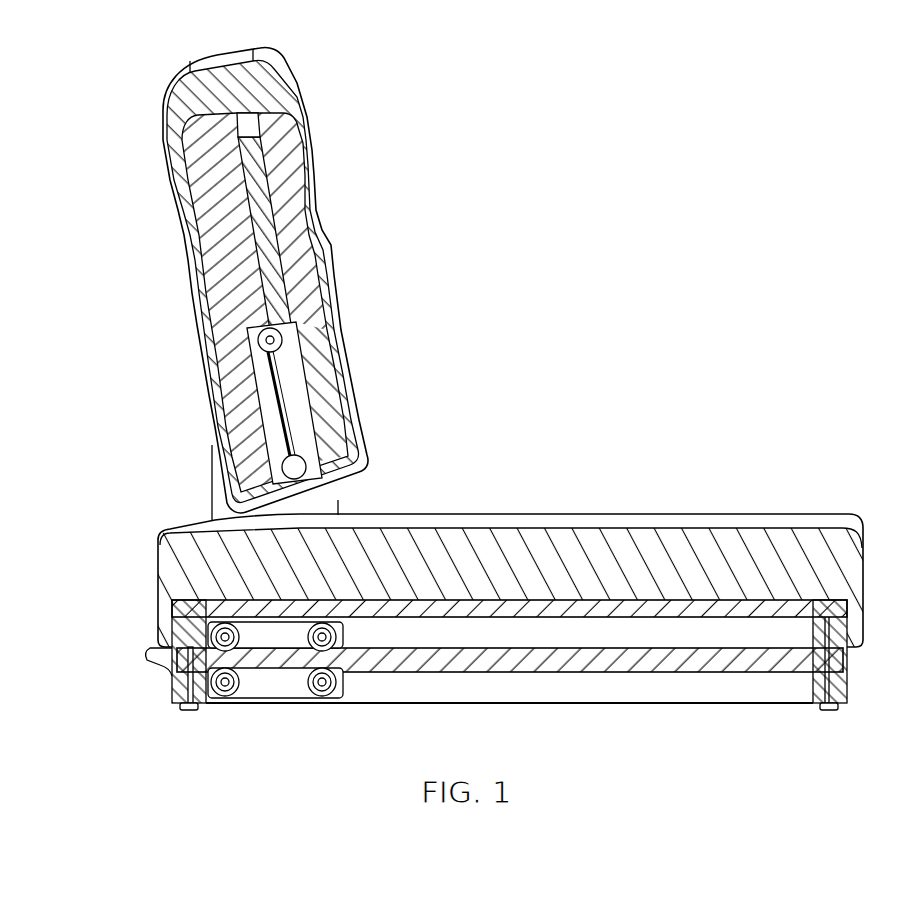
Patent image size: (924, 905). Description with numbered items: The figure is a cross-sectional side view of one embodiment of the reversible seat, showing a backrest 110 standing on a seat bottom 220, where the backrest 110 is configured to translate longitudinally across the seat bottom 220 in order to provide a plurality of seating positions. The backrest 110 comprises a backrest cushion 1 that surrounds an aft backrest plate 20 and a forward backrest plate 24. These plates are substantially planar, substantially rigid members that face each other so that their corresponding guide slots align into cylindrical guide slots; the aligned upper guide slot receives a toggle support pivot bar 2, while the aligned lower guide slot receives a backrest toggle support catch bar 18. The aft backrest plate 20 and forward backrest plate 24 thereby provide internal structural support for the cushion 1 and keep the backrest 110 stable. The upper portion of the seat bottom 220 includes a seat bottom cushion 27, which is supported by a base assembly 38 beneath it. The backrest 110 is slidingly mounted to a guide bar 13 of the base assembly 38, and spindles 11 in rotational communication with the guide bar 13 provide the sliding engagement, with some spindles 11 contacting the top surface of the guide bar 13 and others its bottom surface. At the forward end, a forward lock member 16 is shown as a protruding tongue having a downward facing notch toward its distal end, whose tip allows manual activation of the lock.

The backrest 110 is at (92, 268).
The backrest cushion 1 is at (184, 163).
The forward backrest plate 24 is at (263, 212).
The toggle support pivot bar 2 is at (283, 343).
The aft backrest plate 20 is at (262, 378).
The backrest toggle support catch bar 18 is at (308, 470).
The seat bottom 220 is at (834, 486).
The seat bottom cushion 27 is at (858, 558).
The guide bar 13 is at (712, 662).
The spindle 11 is at (226, 698).
The forward lock member 16 is at (147, 660).
The base assembly 38 is at (852, 716).